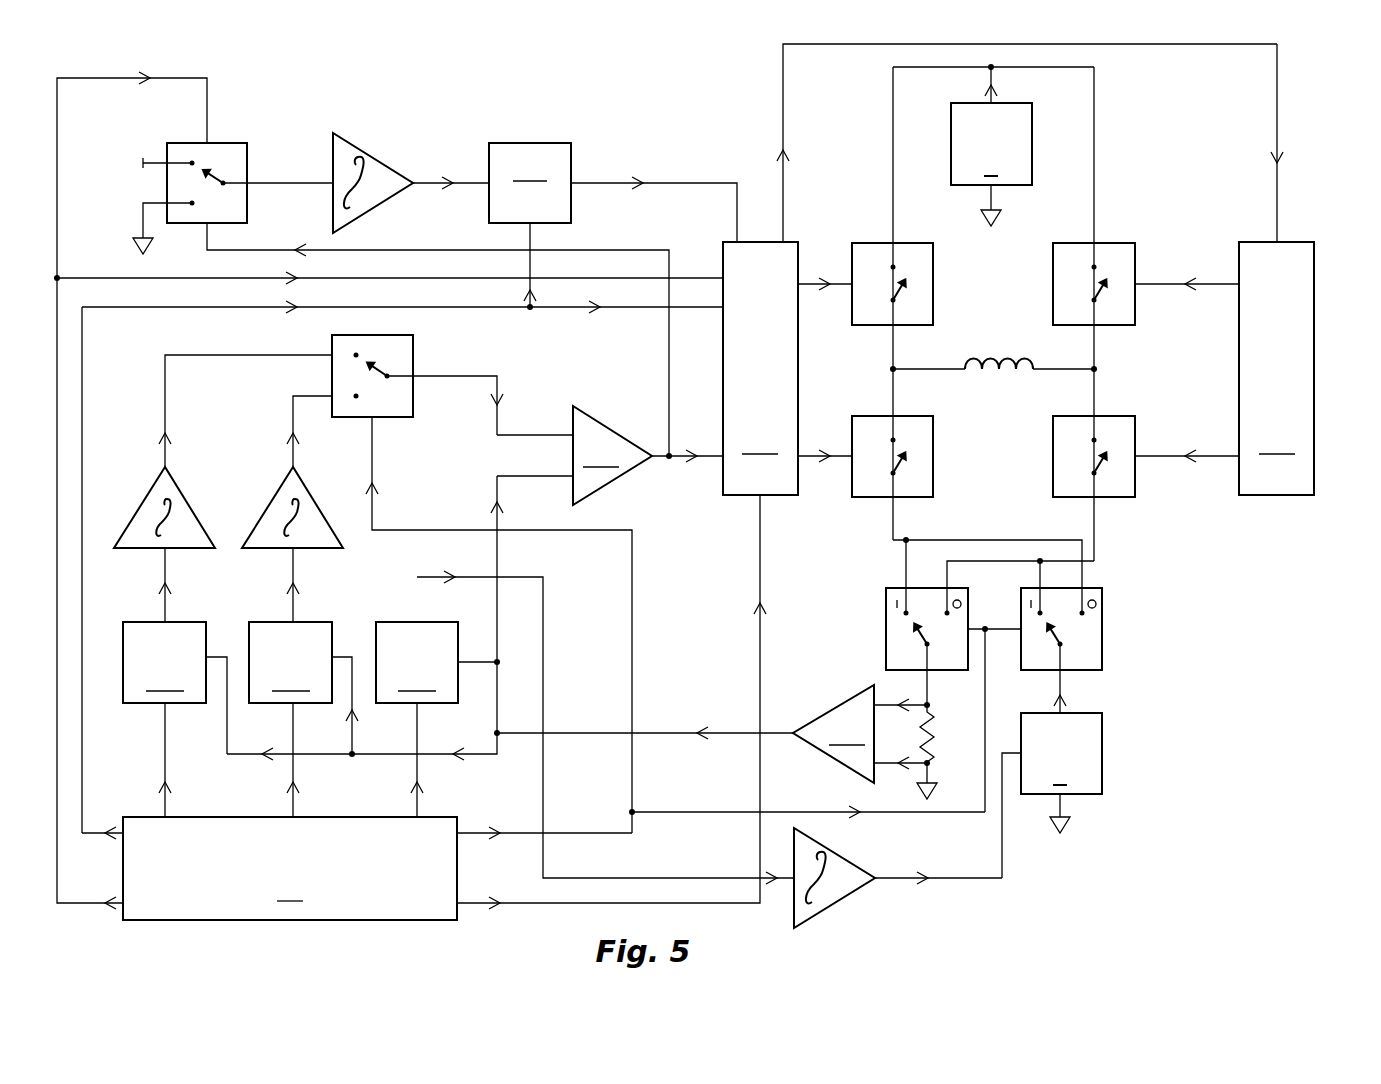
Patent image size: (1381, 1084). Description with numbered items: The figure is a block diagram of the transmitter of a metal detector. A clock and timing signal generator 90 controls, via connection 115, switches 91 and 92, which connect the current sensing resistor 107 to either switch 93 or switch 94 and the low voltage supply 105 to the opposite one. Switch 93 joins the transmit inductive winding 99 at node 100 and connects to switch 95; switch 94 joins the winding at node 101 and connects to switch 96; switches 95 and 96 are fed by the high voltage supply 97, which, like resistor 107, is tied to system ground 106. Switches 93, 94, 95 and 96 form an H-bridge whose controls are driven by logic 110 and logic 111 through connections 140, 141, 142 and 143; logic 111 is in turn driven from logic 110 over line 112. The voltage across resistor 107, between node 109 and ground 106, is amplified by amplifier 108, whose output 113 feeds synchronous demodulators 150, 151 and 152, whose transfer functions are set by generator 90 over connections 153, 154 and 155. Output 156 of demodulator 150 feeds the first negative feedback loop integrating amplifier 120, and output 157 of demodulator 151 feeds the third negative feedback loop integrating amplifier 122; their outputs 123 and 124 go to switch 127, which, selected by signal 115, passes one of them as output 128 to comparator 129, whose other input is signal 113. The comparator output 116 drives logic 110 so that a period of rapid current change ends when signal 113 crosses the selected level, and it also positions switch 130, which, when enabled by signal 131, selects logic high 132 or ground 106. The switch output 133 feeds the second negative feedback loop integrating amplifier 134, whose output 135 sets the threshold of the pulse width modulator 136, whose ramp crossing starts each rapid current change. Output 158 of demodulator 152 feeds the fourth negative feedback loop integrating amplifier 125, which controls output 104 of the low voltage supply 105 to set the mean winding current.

The clock and timing signal generator 90 is at (269, 868).
The switch 91 is at (884, 630).
The switch 92 is at (1103, 640).
The switch 93 is at (933, 455).
The switch 94 is at (1053, 478).
The switch 95 is at (933, 280).
The switch 96 is at (1053, 303).
The high voltage supply 97 is at (1032, 145).
The transmit inductive winding 99 is at (980, 360).
The node 100 is at (932, 369).
The node 101 is at (1052, 369).
The output of the low voltage supply 104 is at (1065, 688).
The low voltage supply 105 is at (1103, 755).
The system ground 106 is at (132, 245).
The current sensing resistor 107 is at (933, 733).
The amplifier 108 is at (833, 734).
The node 109 is at (925, 690).
The logic 110 is at (867, 476).
The logic 111 is at (1276, 368).
The control line 112 is at (1280, 135).
The output of amplifier 113 is at (676, 733).
The connection 115 is at (480, 832).
The output of comparator 116 is at (683, 462).
The first negative feedback loop integrating amplifier 120 is at (147, 495).
The third negative feedback loop integrating amplifier 122 is at (275, 495).
The output of the first negative feedback loop integrating amplifier 123 is at (163, 410).
The output of the third negative feedback loop integrating amplifier 124 is at (291, 410).
The fourth negative feedback loop integrating amplifier 125 is at (845, 898).
The switch 127 is at (413, 400).
The output of switch 128 is at (498, 388).
The comparator 129 is at (574, 455).
The switch 130 is at (240, 143).
The enable signal 131 is at (175, 78).
The logic high 132 is at (157, 158).
The output of switch 133 is at (302, 180).
The second negative feedback loop integrating amplifier 134 is at (378, 158).
The output of the second negative feedback loop integrating amplifier 135 is at (433, 187).
The pulse width modulator 136 is at (613, 225).
The connection 140 is at (815, 283).
The connection 141 is at (815, 462).
The connection 142 is at (1158, 456).
The connection 143 is at (1158, 284).
The synchronous demodulator 150 is at (175, 688).
The synchronous demodulator 151 is at (303, 689).
The synchronous demodulator 152 is at (438, 662).
The connection 153 is at (167, 800).
The connection 154 is at (295, 800).
The connection 155 is at (419, 800).
The output of synchronous demodulator 156 is at (167, 602).
The output of synchronous demodulator 157 is at (295, 602).
The output of synchronous demodulator 158 is at (670, 878).